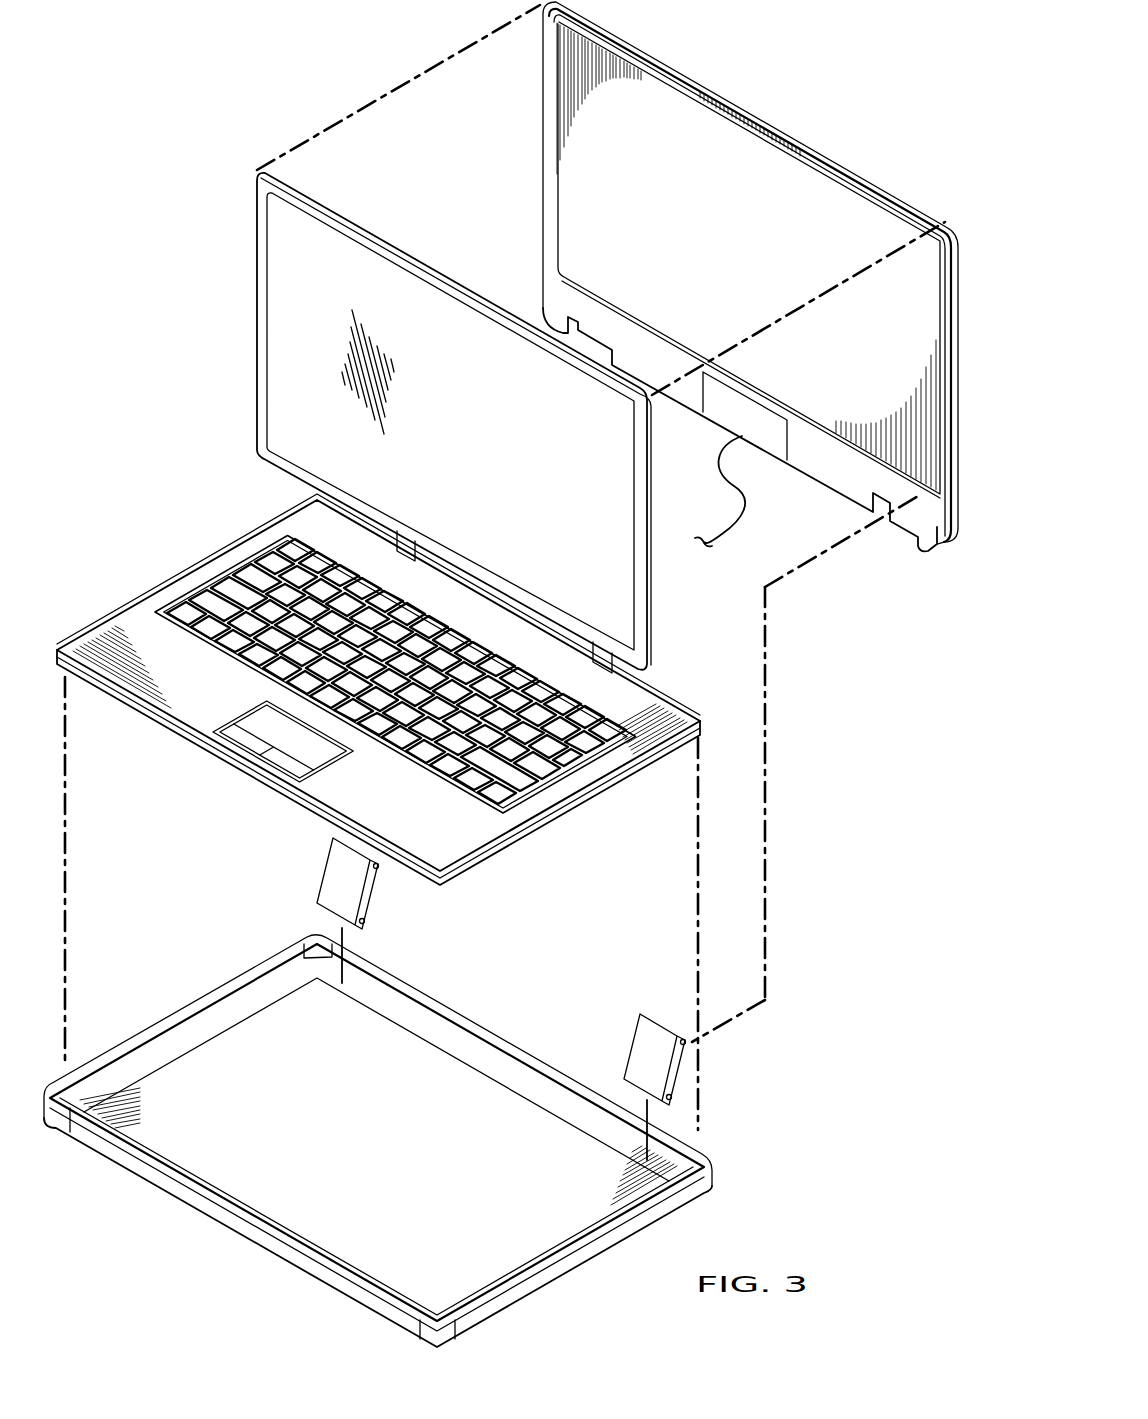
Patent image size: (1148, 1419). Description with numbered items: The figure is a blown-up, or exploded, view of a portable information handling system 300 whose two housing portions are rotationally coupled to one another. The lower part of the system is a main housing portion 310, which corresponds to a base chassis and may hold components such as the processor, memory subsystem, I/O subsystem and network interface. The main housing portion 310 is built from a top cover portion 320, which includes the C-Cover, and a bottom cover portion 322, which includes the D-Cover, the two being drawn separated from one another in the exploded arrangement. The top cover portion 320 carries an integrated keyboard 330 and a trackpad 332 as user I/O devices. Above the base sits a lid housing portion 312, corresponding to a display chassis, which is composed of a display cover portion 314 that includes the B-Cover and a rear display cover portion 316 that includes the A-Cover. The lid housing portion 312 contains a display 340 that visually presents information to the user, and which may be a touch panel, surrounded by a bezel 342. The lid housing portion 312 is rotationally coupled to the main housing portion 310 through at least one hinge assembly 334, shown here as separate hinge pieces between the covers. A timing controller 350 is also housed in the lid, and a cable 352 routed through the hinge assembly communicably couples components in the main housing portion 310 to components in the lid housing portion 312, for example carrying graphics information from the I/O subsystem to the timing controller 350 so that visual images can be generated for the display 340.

The portable information handling system 300 is at (176, 115).
The main housing portion 310 is at (100, 562).
The lid housing portion 312 is at (346, 73).
The display cover portion 314 is at (263, 381).
The rear display cover portion 316 is at (757, 98).
The top cover portion 320 is at (150, 722).
The bottom cover portion 322 is at (245, 1232).
The integrated keyboard 330 is at (210, 588).
The trackpad 332 is at (268, 738).
The hinge assembly 334 is at (323, 876).
The display 340 is at (461, 479).
The bezel 342 is at (255, 293).
The timing controller (TCON) 350 is at (764, 414).
The cable 352 is at (748, 502).